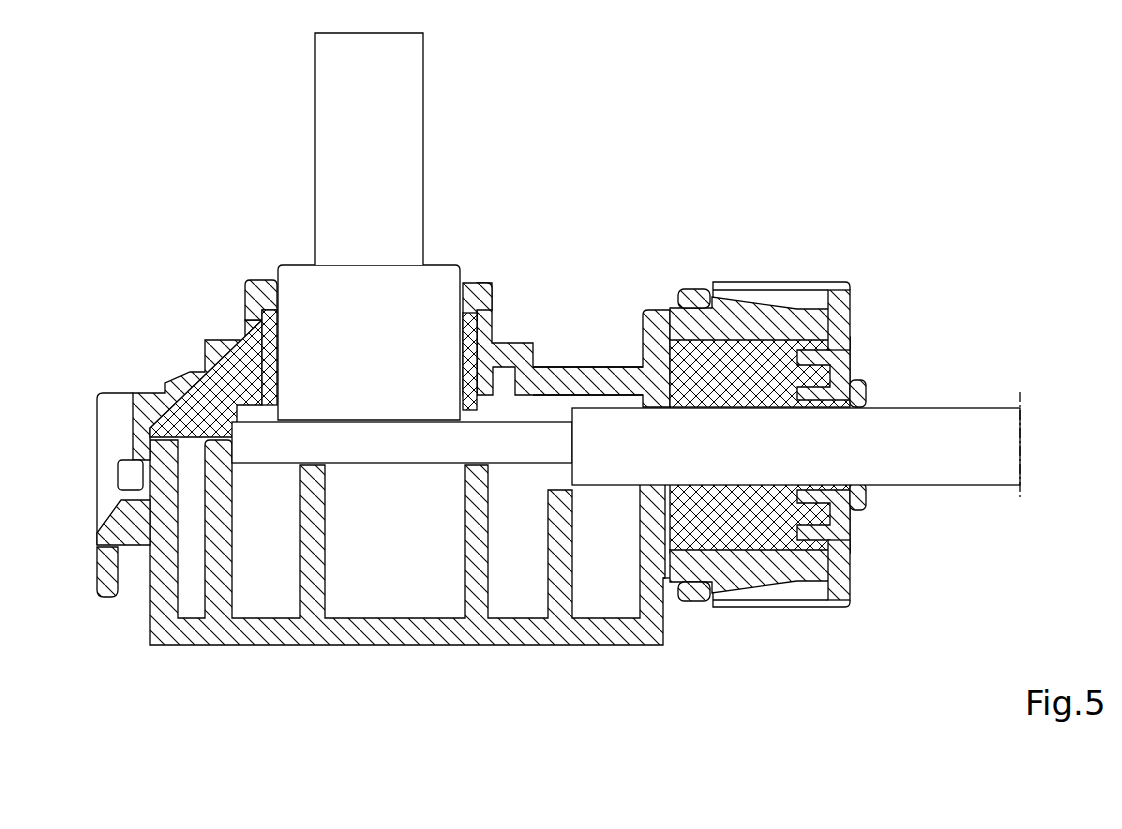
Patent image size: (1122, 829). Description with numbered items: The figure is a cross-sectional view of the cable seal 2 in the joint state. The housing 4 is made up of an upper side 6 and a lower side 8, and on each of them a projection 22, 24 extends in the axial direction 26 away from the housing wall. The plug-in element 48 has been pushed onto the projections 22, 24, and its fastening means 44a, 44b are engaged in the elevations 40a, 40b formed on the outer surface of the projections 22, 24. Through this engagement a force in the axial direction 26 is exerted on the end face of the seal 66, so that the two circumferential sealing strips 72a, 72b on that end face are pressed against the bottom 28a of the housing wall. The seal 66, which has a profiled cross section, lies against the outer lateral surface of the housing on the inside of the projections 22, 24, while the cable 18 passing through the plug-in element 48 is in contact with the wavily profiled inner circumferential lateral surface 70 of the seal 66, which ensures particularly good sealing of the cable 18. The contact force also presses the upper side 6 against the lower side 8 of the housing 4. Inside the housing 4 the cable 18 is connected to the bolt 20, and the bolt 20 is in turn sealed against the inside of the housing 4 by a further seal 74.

The cable seal 2 is at (707, 92).
The housing 4 is at (175, 663).
The upper side 6 is at (162, 408).
The lower side 8 is at (260, 630).
The cable 18 is at (969, 467).
The bolt 20 is at (398, 108).
The projection 22 is at (812, 318).
The projection 24 is at (811, 565).
The axial direction 26 is at (1045, 447).
The bottom 28a is at (677, 362).
The elevation 40a is at (742, 313).
The elevation 40b is at (737, 565).
The fastening means 44a is at (695, 300).
The fastening means 44b is at (697, 590).
The plug-in element 48 is at (845, 342).
The seal 66 is at (858, 393).
The inner circumferential lateral surface 70 is at (770, 410).
The sealing strip 72a is at (663, 370).
The sealing strip 72b is at (660, 383).
The seal 74 is at (265, 332).